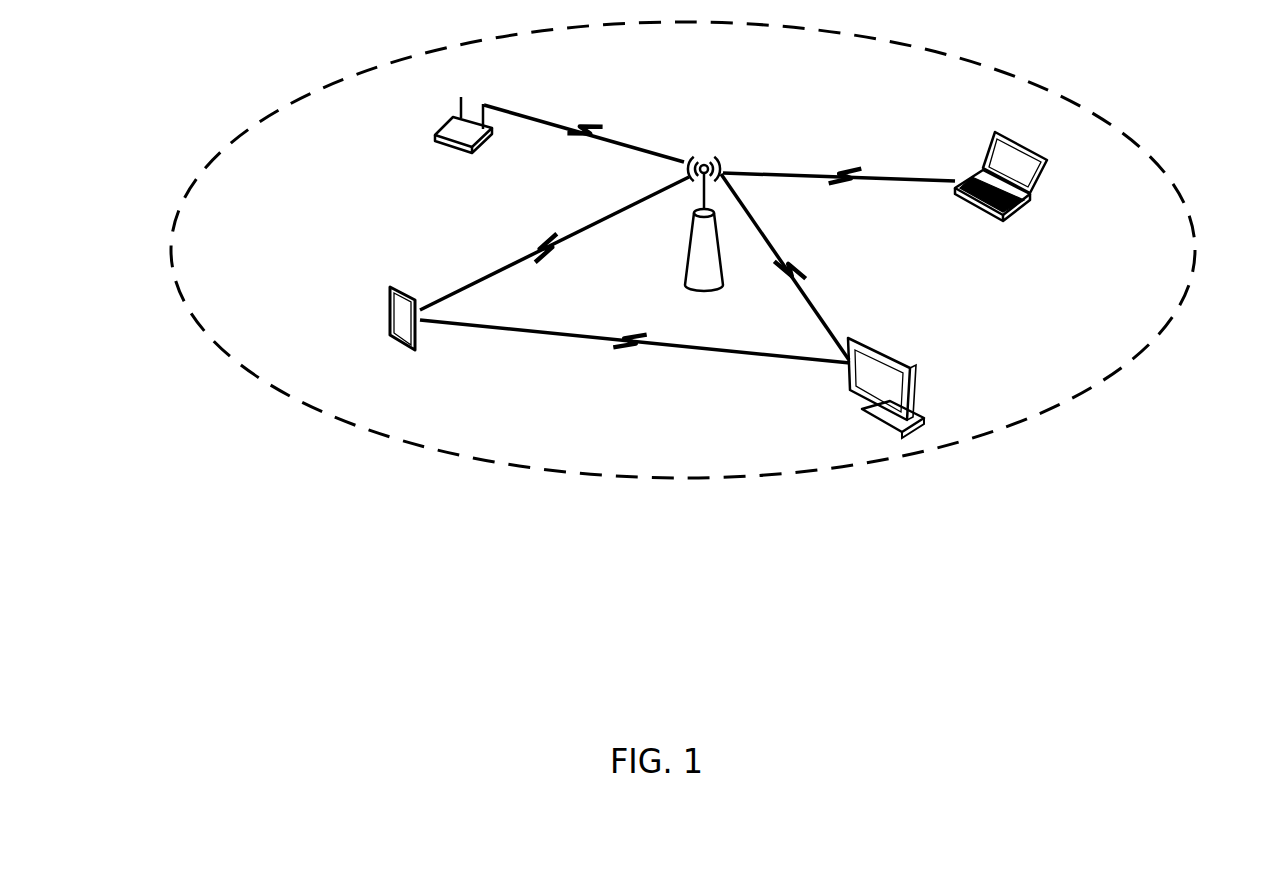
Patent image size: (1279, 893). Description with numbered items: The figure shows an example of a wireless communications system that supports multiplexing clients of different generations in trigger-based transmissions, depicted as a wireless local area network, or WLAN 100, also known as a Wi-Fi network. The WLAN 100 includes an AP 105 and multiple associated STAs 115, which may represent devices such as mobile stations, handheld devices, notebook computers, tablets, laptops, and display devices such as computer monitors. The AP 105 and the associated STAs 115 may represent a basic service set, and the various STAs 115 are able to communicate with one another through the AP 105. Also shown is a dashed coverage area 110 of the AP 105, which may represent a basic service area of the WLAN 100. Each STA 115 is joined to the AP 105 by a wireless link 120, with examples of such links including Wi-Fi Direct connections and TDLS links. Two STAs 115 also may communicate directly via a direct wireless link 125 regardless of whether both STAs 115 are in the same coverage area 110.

The wireless local area network 100 is at (1136, 679).
The AP 105 is at (683, 268).
The coverage area 110 is at (672, 481).
The STA 115 is at (447, 140).
The direct wireless link 120 is at (578, 122).
The direct wireless link 125 is at (660, 350).